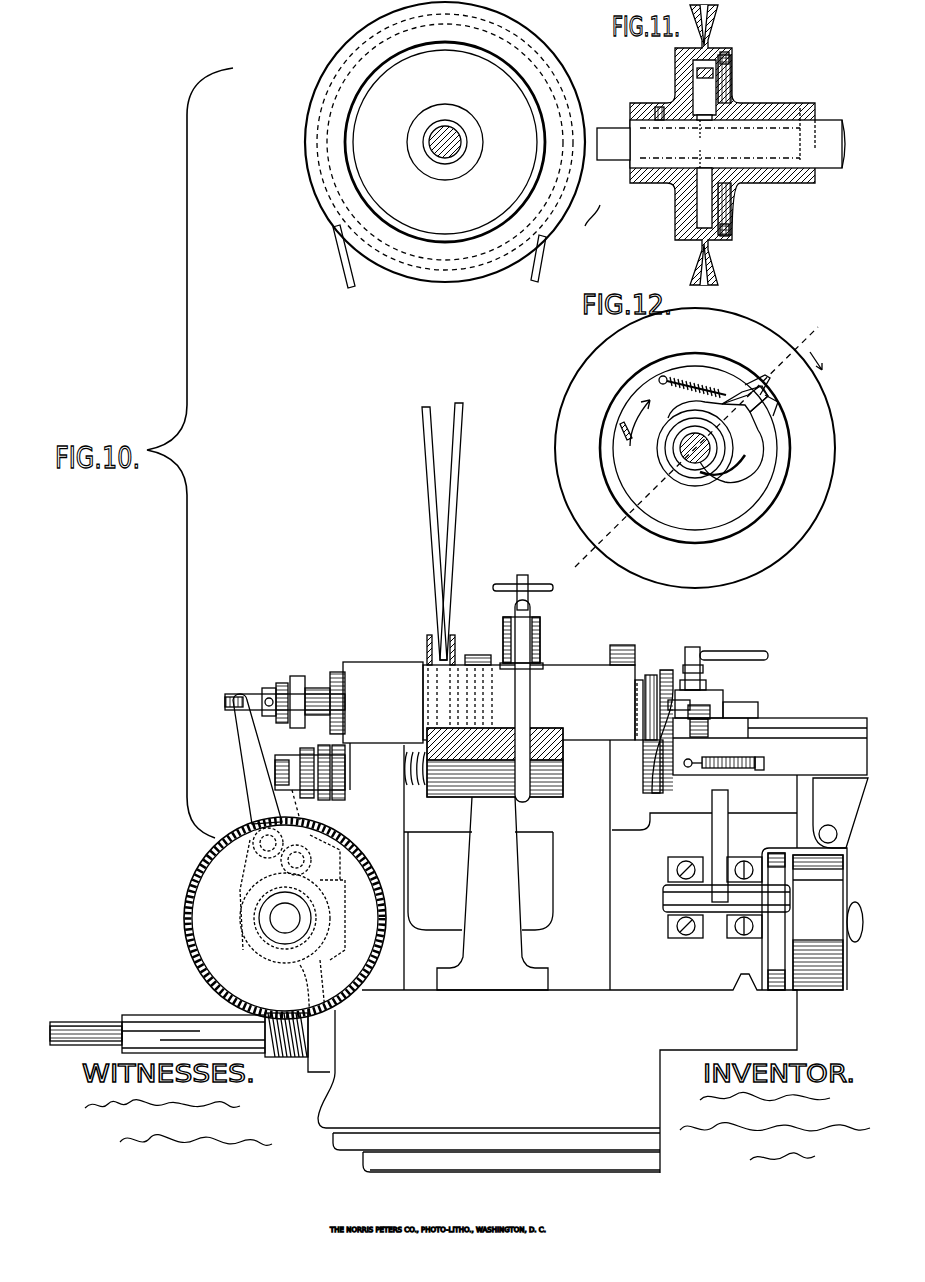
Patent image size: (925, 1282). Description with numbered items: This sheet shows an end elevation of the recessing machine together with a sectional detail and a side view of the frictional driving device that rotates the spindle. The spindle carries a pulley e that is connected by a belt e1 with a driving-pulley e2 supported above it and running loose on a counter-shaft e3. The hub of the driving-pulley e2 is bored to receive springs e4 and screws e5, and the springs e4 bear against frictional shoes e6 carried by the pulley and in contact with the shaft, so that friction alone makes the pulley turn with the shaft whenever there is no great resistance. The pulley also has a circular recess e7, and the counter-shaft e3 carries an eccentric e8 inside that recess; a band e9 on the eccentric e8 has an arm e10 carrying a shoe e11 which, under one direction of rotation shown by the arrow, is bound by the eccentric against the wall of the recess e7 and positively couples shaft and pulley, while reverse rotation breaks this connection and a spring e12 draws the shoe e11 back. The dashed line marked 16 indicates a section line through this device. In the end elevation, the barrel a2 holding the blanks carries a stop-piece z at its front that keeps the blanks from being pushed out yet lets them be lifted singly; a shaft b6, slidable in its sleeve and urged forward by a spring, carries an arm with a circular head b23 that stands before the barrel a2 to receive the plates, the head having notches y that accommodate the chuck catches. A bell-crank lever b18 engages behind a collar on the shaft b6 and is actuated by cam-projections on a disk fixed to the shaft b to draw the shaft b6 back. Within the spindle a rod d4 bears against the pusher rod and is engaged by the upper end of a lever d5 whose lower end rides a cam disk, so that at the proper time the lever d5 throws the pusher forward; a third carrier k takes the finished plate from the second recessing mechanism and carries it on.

In FIG. 10, the pulley e is at (428, 652).
In FIG. 10, the belt e1 is at (428, 510).
In FIG. 10, the driving-pulley e2 is at (420, 270).
In FIG. 11, the driving-pulley e2 is at (712, 272).
In FIG. 12, the driving-pulley e2 is at (768, 346).
In FIG. 10, the counter-shaft e3 is at (455, 158).
In FIG. 11, the counter-shaft e3 is at (830, 134).
In FIG. 12, the counter-shaft e3 is at (688, 465).
In FIG. 11, the springs e4 is at (735, 105).
In FIG. 11, the screws e5 is at (735, 62).
In FIG. 11, the frictional shoes e6 is at (745, 100).
In FIG. 12, the circular recess e7 is at (618, 426).
In FIG. 11, the eccentric e8 is at (703, 142).
In FIG. 12, the eccentric e8 is at (676, 442).
In FIG. 10, the band e9 is at (580, 229).
In FIG. 11, the band e9 is at (590, 215).
In FIG. 12, the band e9 is at (712, 478).
In FIG. 11, the arm e10 is at (693, 92).
In FIG. 12, the arm e10 is at (726, 424).
In FIG. 11, the shoe e11 is at (722, 62).
In FIG. 12, the shoe e11 is at (760, 405).
In FIG. 12, the spring e12 is at (696, 378).
In FIG. 12, the section line 16 is at (693, 445).
In FIG. 10, the barrel a2 is at (565, 690).
In FIG. 10, the shaft b is at (283, 925).
In FIG. 10, the shaft b6 is at (340, 780).
In FIG. 10, the bell-crank lever b18 is at (290, 812).
In FIG. 10, the circular head b23 is at (640, 706).
In FIG. 10, the rod d4 is at (256, 697).
In FIG. 10, the lever d5 is at (236, 758).
In FIG. 10, the stop-piece z is at (638, 690).
In FIG. 10, the notches y is at (657, 690).
In FIG. 10, the third carrier k is at (683, 738).